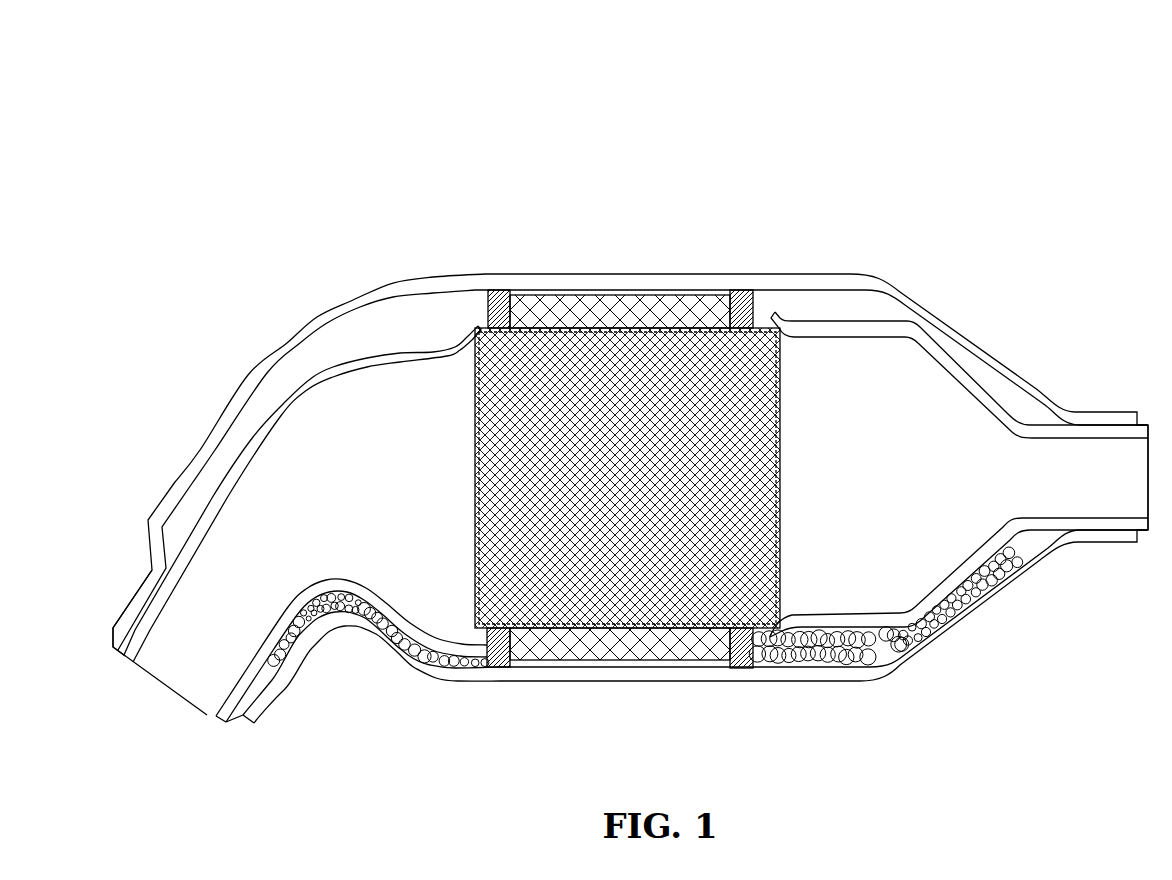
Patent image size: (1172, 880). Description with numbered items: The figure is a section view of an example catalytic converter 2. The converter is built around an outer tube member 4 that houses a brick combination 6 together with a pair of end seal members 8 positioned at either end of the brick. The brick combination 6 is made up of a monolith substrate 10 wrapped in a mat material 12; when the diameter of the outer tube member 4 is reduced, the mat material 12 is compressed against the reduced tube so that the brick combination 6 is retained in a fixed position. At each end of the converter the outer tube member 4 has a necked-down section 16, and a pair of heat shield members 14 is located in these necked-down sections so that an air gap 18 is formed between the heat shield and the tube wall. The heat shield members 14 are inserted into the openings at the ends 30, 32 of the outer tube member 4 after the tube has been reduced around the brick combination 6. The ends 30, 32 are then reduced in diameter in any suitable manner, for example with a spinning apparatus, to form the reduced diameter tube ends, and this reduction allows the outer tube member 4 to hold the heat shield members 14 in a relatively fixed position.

The catalytic converter 2 is at (822, 180).
The outer tube member 4 is at (1005, 360).
The brick combination 6 is at (606, 628).
The end seal member 8 is at (756, 308).
The monolith substrate 10 is at (657, 583).
The mat material 12 is at (652, 306).
The heat shield member 14 is at (318, 410).
The necked-down section 16 is at (243, 663).
The air gap 18 is at (424, 326).
The end of the outer tube member 30 is at (1078, 536).
The end of the outer tube member 32 is at (130, 607).